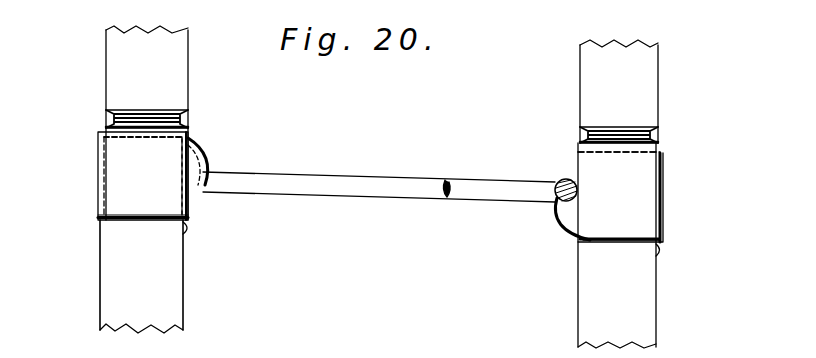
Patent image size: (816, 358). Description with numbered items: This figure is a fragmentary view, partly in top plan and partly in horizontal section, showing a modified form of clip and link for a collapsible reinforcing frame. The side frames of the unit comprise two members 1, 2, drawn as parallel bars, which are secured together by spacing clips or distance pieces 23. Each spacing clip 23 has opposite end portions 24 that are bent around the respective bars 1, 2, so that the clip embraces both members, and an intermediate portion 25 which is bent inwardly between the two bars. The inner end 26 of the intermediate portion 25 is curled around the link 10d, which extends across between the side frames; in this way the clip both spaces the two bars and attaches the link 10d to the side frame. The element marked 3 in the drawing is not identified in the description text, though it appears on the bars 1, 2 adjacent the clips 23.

The member 1 is at (648, 100).
The member 2 is at (117, 70).
The ring 3 is at (170, 118).
The link 10d is at (468, 146).
The spacing clip 23 is at (100, 168).
The end portion 24 is at (178, 196).
The intermediate portion 25 is at (119, 140).
The inner end 26 is at (204, 163).